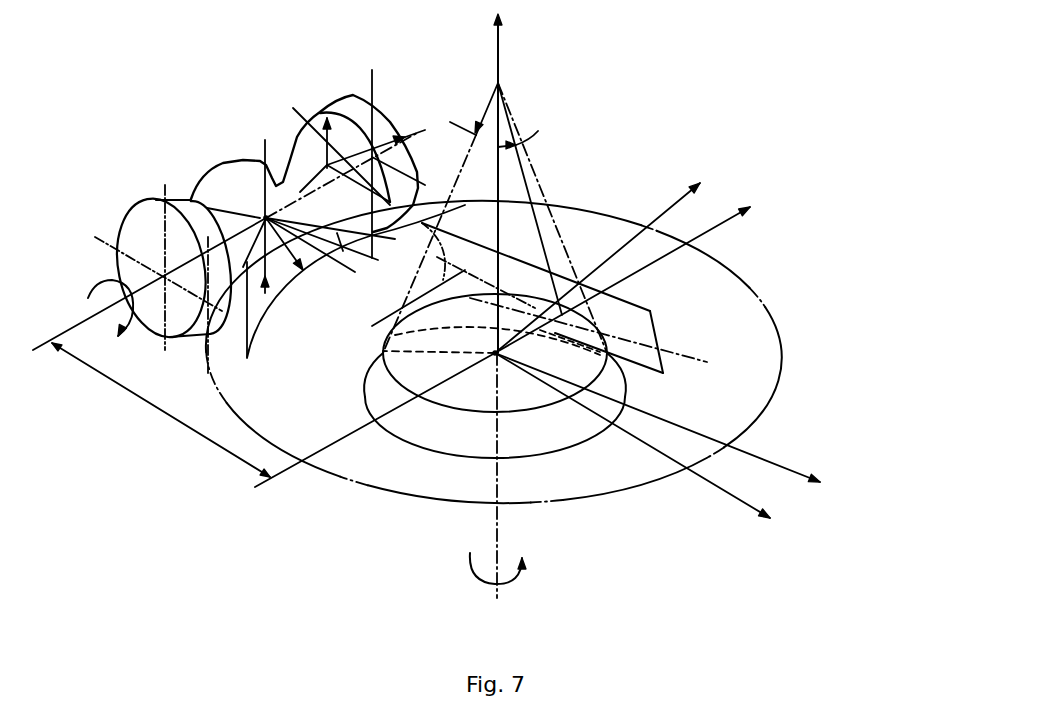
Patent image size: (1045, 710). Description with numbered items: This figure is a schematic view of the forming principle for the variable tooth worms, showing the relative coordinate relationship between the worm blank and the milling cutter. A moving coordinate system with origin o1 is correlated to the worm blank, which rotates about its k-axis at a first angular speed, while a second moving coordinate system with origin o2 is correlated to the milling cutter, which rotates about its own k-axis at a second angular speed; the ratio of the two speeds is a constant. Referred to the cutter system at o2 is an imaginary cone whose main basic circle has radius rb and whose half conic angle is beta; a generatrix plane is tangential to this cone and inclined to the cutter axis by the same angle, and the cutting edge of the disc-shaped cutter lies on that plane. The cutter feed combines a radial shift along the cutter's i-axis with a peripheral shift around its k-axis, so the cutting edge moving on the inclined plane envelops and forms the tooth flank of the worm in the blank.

The origin of worm blank moving coordinate system o1 is at (229, 221).
The origin of milling cutter moving coordinate system o2 is at (417, 308).
The radius of main basic circle rb is at (491, 339).